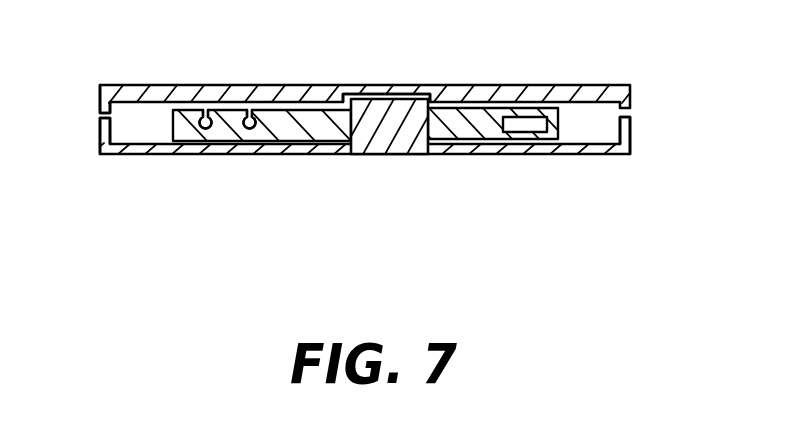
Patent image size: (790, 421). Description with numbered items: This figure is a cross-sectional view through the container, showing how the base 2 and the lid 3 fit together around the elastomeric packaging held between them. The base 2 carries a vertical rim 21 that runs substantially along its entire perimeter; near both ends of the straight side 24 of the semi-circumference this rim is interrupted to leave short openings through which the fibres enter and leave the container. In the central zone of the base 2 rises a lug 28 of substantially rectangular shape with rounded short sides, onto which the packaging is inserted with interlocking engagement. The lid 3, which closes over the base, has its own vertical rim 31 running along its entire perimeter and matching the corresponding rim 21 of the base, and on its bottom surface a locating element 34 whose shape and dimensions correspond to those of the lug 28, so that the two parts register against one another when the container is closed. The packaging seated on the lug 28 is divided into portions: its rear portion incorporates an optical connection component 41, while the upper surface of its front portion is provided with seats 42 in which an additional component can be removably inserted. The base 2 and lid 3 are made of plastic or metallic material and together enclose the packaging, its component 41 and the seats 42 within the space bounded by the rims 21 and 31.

The base 2 is at (595, 154).
The lid 3 is at (553, 86).
The vertical rim 21 is at (632, 137).
The straight side 24 is at (100, 132).
The lug 28 is at (397, 117).
The vertical rim 31 is at (99, 97).
The locating element 34 is at (391, 88).
The optical connection component 41 is at (526, 125).
The seats 42 is at (250, 127).